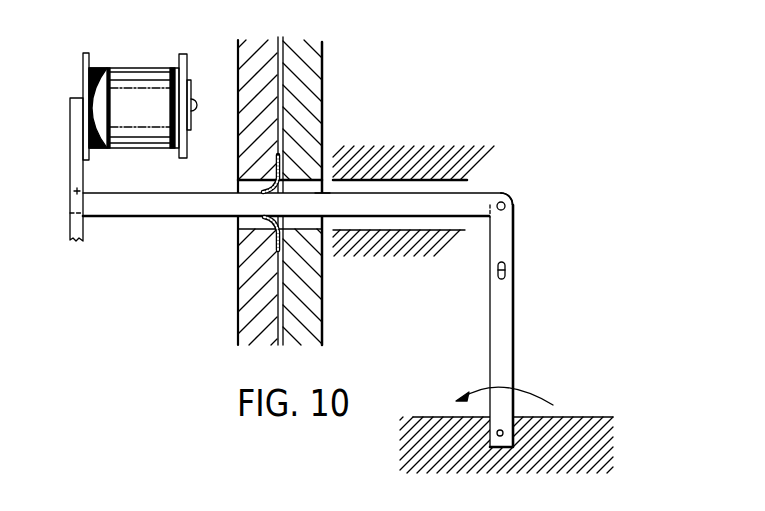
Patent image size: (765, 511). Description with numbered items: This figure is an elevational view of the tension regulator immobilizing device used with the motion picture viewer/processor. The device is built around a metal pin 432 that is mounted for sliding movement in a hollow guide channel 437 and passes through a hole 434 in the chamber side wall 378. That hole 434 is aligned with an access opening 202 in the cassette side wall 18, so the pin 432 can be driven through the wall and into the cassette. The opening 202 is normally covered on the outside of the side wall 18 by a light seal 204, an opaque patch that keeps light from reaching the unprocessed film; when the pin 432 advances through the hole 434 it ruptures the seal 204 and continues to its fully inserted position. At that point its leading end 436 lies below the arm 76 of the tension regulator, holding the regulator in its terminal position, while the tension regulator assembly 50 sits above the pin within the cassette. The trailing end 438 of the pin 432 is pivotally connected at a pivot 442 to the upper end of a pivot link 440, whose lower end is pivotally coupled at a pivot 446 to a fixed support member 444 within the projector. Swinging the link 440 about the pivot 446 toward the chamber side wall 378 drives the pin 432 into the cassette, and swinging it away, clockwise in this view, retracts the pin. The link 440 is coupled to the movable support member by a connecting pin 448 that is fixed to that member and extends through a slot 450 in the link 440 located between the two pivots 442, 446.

The cassette side wall 18 is at (238, 63).
The spool 50 is at (140, 95).
The arm 76 is at (72, 228).
The access opening 202 is at (253, 220).
The light seal 204 is at (272, 190).
The chamber side wall 378 is at (323, 95).
The pin 432 is at (396, 206).
The hole 434 is at (315, 189).
The leading end 436 is at (77, 191).
The hollow guide channel 437 is at (418, 187).
The trailing end 438 is at (471, 201).
The pivot link 440 is at (513, 236).
The pivot 442 is at (508, 198).
The fixed support member 444 is at (570, 426).
The pivot 446 is at (503, 437).
The connecting pin 448 is at (507, 270).
The slot 450 is at (499, 262).